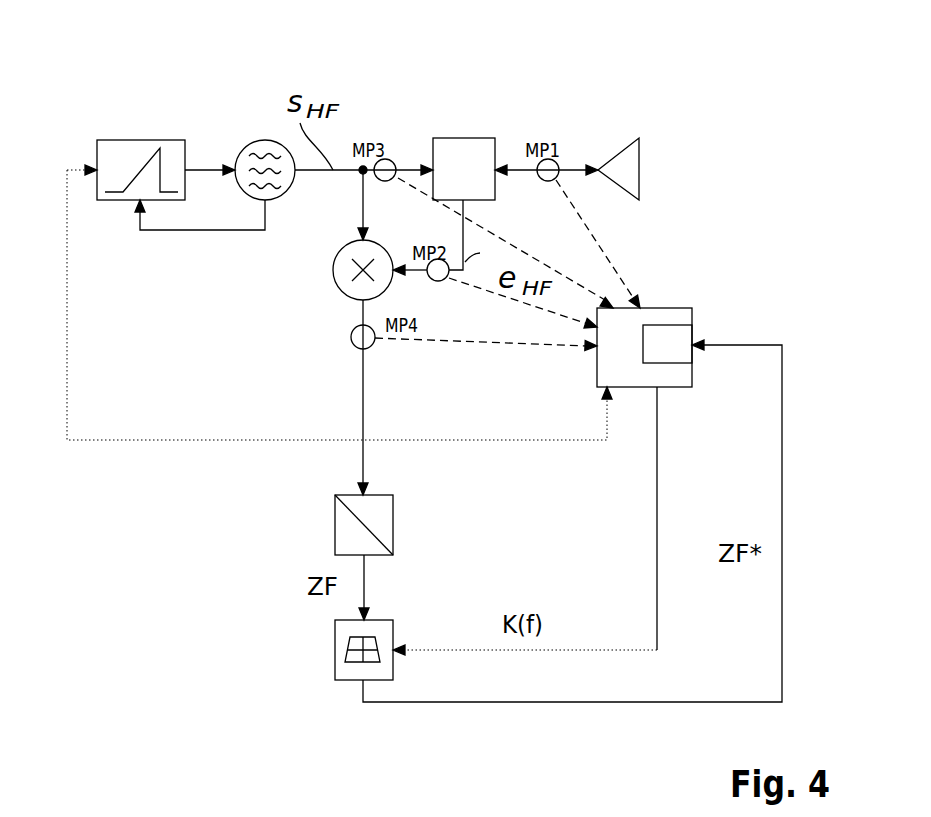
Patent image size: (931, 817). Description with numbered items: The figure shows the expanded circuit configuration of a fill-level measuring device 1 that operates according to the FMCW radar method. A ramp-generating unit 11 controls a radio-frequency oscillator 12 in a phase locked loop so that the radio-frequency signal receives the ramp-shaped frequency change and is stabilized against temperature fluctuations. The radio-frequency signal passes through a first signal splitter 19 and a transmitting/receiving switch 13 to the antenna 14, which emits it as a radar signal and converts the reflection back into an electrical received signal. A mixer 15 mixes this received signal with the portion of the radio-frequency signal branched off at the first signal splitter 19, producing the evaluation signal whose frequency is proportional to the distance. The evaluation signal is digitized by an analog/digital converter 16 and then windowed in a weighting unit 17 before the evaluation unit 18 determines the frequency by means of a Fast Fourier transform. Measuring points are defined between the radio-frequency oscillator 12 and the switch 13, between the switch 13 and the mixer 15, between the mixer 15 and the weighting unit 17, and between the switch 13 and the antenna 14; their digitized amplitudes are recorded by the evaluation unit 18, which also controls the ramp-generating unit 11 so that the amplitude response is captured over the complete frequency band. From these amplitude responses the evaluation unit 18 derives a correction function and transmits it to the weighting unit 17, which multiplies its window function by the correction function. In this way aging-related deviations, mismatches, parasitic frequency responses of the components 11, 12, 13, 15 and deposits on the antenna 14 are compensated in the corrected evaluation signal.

The fill-level measuring device 1 is at (677, 64).
The ramp-generating unit 11 is at (137, 150).
The radio-frequency oscillator 12 is at (275, 148).
The transmitting/receiving switch 13 is at (448, 153).
The antenna 14 is at (627, 165).
The mixer 15 is at (367, 288).
The analog/digital converter 16 is at (347, 547).
The weighting unit 17 is at (342, 643).
The evaluation unit 18 is at (672, 322).
The first signal splitter 19 is at (362, 172).